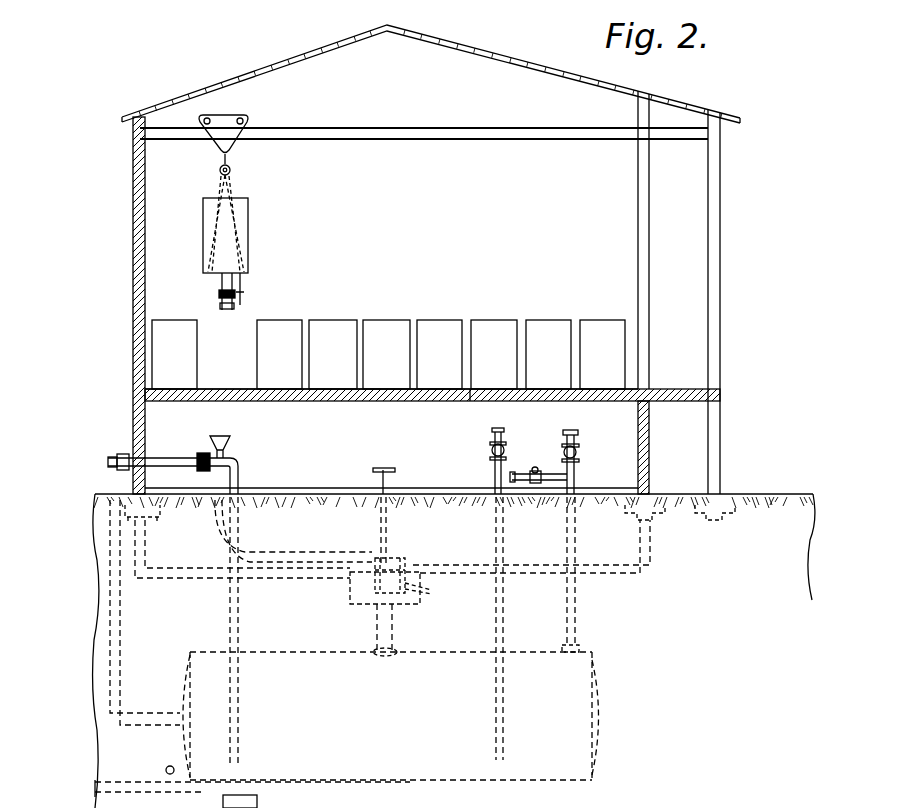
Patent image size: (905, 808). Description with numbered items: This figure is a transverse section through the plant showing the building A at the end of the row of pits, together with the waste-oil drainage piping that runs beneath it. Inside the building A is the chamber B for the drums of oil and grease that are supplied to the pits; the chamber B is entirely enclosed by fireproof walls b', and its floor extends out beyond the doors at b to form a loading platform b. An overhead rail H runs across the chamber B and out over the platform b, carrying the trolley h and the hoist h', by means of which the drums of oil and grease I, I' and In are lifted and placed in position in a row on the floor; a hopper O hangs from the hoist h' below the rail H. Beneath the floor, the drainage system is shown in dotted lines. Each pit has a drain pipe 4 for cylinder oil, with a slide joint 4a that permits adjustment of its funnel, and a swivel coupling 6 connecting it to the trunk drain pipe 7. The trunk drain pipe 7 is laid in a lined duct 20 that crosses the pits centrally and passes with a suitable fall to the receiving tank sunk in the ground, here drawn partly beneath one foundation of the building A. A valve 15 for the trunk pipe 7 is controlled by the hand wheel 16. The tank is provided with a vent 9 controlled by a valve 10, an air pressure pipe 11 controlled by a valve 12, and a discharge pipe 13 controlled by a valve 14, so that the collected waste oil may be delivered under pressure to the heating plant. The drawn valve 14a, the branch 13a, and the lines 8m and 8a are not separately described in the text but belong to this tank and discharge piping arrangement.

The building A is at (714, 300).
The chamber B is at (391, 322).
The overhead rail H is at (505, 128).
The trolley h is at (226, 133).
The hoist h' is at (242, 223).
The hopper O is at (249, 250).
The drum of oil and grease I is at (414, 342).
The drum of oil and grease I' is at (602, 340).
The drum of oil and grease In is at (165, 325).
The platform b is at (432, 381).
The fireproof walls b' is at (470, 419).
The discharge pipe 13 is at (112, 458).
The valve 14 is at (200, 458).
The valve pipe 14a is at (505, 445).
The hand wheel 16 is at (384, 470).
The vent 9 is at (580, 433).
The valve 10 is at (578, 453).
The air pressure pipe 11 is at (514, 473).
The valve 12 is at (538, 471).
The drain pipe 4 is at (252, 554).
The slide joint 4a is at (298, 560).
The valve 15 is at (400, 566).
The lined duct 20 is at (434, 591).
The trunk drain pipe 7 is at (420, 601).
The pipe 13a is at (505, 560).
The swivel coupling 6 is at (597, 675).
The pipe 8m is at (143, 632).
The pipe 8a is at (168, 770).